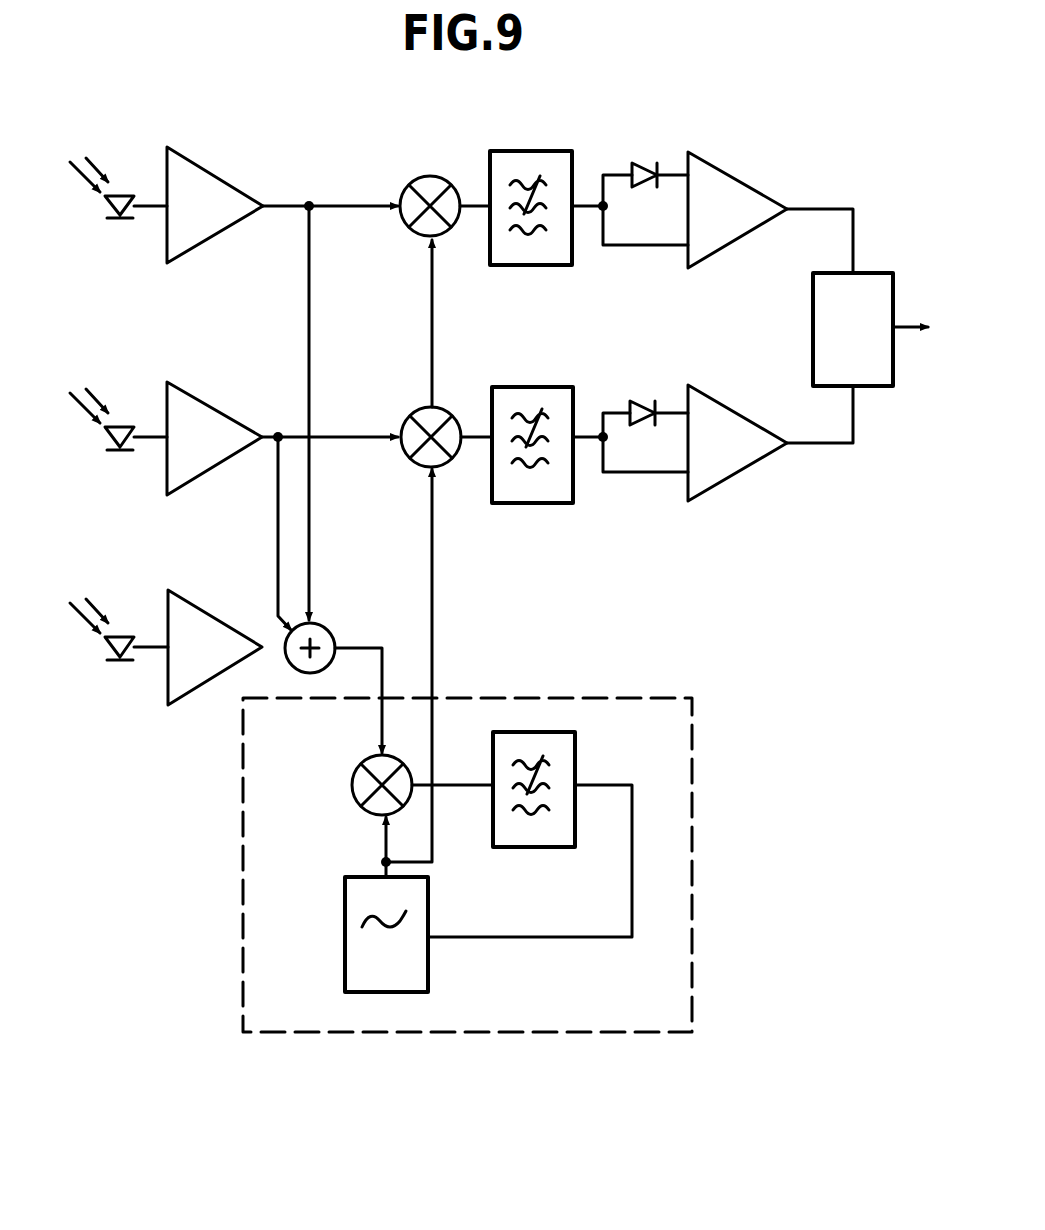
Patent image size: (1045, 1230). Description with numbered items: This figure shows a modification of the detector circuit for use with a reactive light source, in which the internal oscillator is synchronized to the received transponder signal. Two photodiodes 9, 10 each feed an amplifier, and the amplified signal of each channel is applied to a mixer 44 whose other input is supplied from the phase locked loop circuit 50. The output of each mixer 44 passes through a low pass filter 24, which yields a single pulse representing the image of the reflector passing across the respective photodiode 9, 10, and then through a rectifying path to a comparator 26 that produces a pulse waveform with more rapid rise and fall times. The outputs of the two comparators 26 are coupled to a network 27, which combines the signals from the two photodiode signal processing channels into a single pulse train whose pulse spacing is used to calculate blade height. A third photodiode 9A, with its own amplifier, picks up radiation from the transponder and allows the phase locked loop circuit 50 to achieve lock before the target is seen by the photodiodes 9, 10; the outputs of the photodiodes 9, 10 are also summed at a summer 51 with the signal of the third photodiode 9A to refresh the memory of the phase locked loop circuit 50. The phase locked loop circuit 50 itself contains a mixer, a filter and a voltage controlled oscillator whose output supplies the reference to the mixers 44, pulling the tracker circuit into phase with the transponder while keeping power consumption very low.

The photodiode 10 is at (124, 196).
The photodiode 9 is at (122, 427).
The third photodiode 9A is at (124, 637).
The mixer 44 is at (435, 178).
The low pass filter 24 is at (577, 152).
The comparator 26 is at (740, 176).
The network 27 is at (873, 272).
The summer 51 is at (330, 630).
The phase locked loop circuit 50 is at (692, 697).